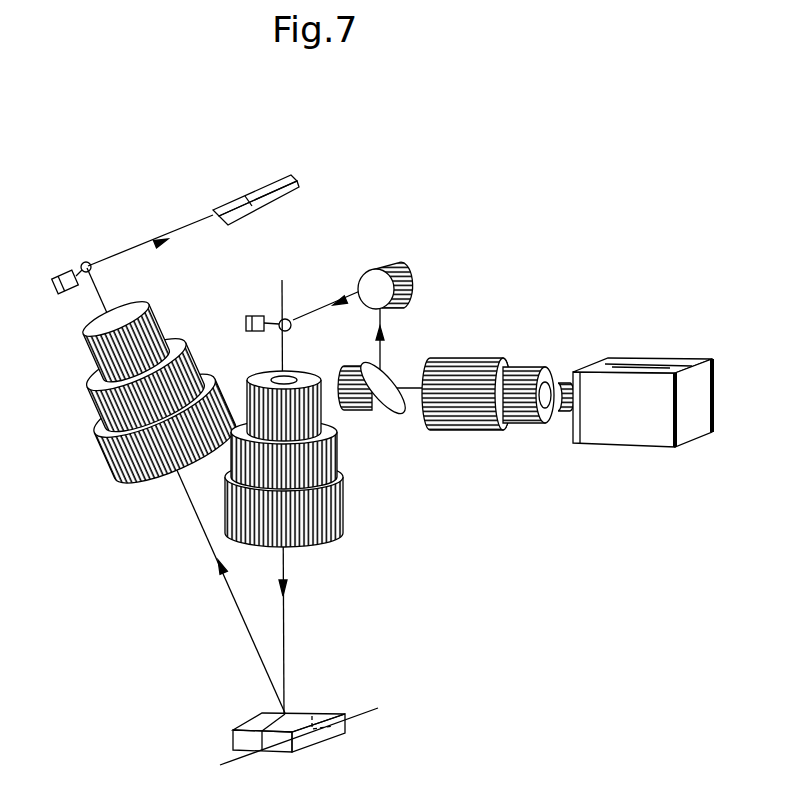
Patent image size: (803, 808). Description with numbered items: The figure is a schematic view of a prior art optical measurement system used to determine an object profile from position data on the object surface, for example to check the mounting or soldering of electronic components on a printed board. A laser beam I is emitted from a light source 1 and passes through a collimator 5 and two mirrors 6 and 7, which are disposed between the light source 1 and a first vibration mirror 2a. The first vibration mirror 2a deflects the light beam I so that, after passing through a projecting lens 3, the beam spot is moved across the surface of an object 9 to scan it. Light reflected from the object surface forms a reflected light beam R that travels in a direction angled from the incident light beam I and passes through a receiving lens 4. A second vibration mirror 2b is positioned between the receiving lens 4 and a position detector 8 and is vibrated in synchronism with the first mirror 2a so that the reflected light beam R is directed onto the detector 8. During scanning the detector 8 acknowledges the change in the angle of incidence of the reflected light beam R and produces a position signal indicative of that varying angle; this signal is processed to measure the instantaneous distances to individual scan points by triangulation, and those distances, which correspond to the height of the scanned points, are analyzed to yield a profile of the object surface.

The light source 1 is at (638, 355).
The first vibration mirror 2a is at (282, 318).
The second vibration mirror 2b is at (84, 262).
The projecting lens 3 is at (332, 520).
The receiving lens 4 is at (107, 447).
The collimator 5 is at (505, 358).
The mirror 6 is at (393, 411).
The mirror 7 is at (383, 291).
The position detector 8 is at (268, 186).
The object 9 is at (310, 720).
The reflected light beam R is at (245, 628).
The laser beam I is at (288, 633).